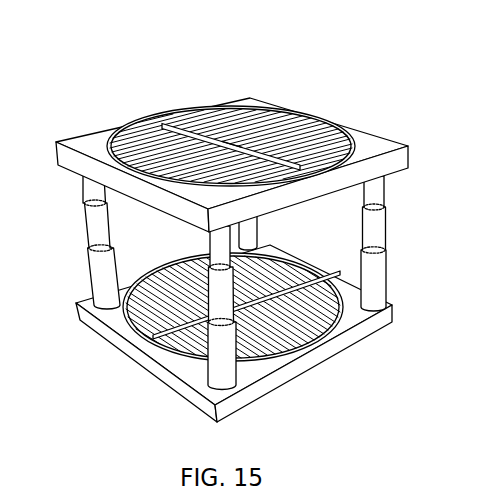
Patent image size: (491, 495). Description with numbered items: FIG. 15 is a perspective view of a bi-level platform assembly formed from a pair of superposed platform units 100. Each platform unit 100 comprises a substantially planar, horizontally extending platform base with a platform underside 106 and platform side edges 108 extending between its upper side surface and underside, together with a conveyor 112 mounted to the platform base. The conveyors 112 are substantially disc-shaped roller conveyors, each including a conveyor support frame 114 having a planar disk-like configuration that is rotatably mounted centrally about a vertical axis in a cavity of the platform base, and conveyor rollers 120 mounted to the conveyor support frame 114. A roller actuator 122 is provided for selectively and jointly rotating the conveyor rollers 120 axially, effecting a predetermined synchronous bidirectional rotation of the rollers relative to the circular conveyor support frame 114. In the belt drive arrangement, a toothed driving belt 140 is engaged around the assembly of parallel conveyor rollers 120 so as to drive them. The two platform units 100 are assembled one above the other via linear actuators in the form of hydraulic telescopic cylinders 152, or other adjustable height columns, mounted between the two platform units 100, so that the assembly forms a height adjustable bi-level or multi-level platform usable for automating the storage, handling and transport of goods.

The platform unit 100 is at (241, 223).
The platform underside 106 is at (303, 347).
The platform side edges 108 is at (355, 320).
The conveyor 112 is at (202, 139).
The conveyor support frame 114 is at (367, 157).
The conveyor rollers 120 is at (170, 125).
The roller actuator 122 is at (283, 157).
The driving belt 140 is at (232, 147).
The hydraulic telescopic cylinders 152 is at (100, 280).